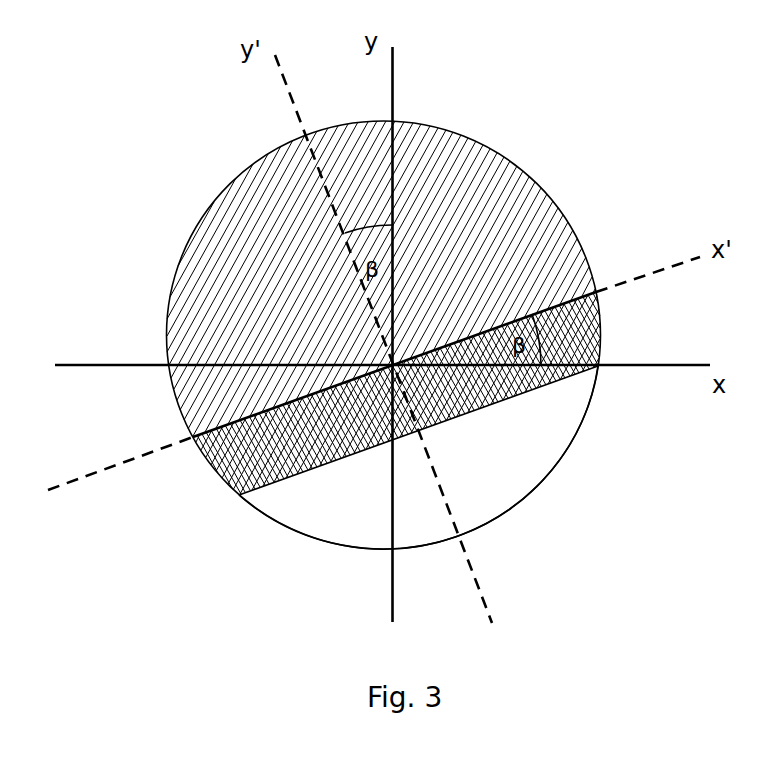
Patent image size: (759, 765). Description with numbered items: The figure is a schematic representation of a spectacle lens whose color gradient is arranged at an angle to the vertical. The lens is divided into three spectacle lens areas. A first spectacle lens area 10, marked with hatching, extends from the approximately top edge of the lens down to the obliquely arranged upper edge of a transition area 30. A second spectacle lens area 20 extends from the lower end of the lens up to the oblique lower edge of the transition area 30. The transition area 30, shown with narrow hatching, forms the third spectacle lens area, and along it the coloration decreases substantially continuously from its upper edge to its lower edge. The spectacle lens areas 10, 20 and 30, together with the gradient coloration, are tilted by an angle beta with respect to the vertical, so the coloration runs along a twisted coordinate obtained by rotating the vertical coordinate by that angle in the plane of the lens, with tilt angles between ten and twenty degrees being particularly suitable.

The first spectacle lens area 10 is at (490, 172).
The second spectacle lens area 20 is at (535, 435).
The transition area 30 is at (230, 453).